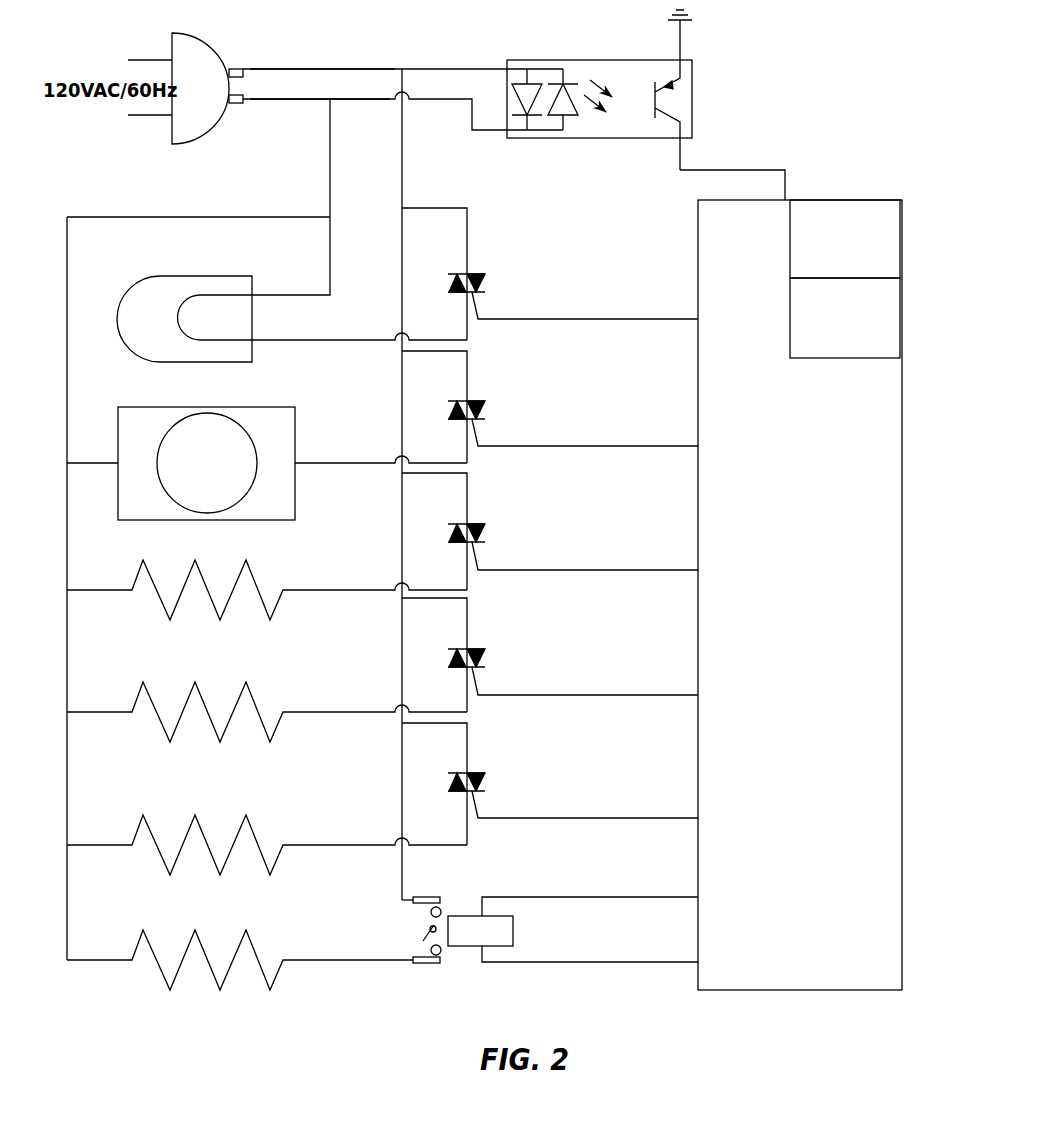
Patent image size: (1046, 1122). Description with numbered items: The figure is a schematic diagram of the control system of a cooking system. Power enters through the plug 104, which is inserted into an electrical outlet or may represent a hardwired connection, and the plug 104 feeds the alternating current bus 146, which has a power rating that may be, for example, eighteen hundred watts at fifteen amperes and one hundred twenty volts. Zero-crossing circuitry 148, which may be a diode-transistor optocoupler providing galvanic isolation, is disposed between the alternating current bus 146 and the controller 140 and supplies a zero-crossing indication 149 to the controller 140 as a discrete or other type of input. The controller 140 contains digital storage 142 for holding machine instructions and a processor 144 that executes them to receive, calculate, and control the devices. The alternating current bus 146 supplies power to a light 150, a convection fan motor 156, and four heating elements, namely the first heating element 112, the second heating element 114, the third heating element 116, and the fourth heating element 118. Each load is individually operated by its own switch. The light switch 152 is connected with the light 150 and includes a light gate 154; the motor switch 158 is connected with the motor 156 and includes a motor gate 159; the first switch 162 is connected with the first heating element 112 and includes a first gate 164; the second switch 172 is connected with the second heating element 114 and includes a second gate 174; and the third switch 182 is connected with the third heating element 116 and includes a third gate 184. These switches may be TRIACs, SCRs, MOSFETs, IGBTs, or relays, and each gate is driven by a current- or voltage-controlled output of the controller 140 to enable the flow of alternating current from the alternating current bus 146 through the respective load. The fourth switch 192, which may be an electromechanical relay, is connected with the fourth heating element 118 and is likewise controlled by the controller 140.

The plug 104 is at (185, 48).
The alternating current bus 146 is at (382, 62).
The zero-crossing circuitry 148 is at (604, 57).
The zero-crossing indication 149 is at (750, 170).
The controller 140 is at (834, 595).
The digital storage 142 is at (790, 249).
The processor 144 is at (790, 331).
The light 150 is at (190, 276).
The convection fan motor 156 is at (250, 407).
The first heating element 112 is at (280, 558).
The second heating element 114 is at (280, 680).
The third heating element 116 is at (280, 800).
The fourth heating element 118 is at (280, 918).
The light switch 152 is at (485, 266).
The light gate 154 is at (482, 318).
The motor switch 158 is at (485, 393).
The motor gate 159 is at (482, 445).
The first switch 162 is at (485, 516).
The first gate 164 is at (482, 569).
The second switch 172 is at (485, 641).
The second gate 174 is at (482, 694).
The third switch 182 is at (485, 765).
The third gate 184 is at (482, 817).
The fourth switch 192 is at (488, 890).